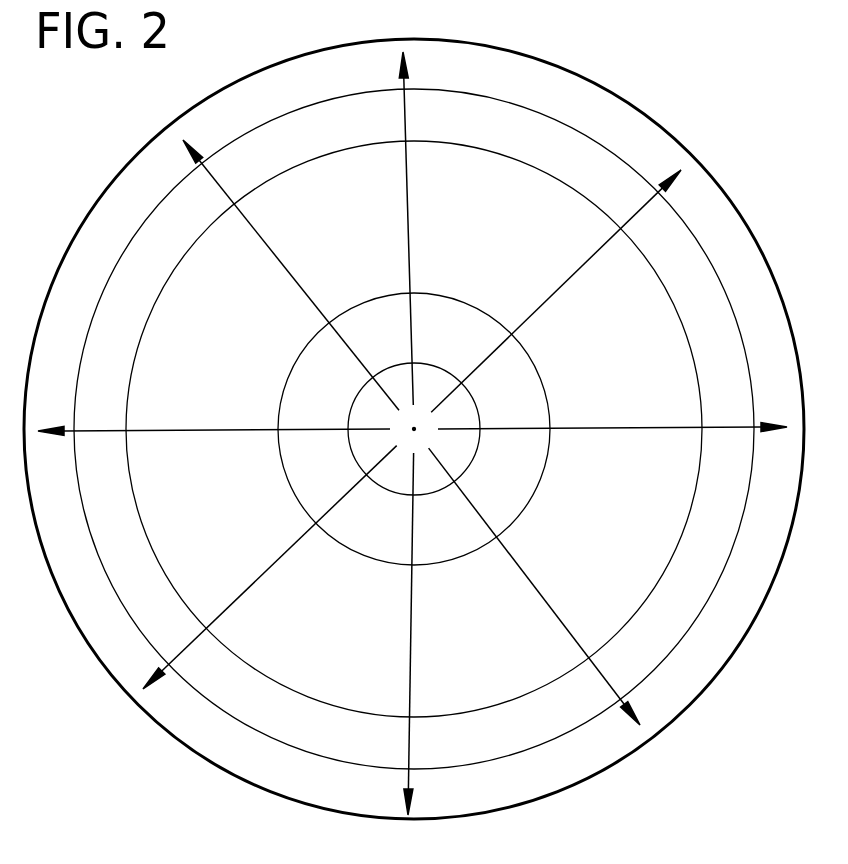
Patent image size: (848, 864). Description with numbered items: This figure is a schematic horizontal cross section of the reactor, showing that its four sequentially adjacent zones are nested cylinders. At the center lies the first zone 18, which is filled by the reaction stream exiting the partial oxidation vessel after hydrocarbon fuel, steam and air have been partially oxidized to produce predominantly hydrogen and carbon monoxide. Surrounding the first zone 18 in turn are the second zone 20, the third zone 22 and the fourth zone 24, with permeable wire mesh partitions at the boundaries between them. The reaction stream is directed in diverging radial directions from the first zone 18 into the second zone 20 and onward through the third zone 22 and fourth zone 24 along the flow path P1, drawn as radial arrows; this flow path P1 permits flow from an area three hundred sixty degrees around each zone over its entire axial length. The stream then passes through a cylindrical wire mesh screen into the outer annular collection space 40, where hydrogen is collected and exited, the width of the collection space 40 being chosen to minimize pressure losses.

The flow path P1 is at (415, 418).
The first zone 18 is at (458, 408).
The second zone 20 is at (527, 410).
The third zone 22 is at (645, 338).
The fourth zone 24 is at (723, 362).
The collection space 40 is at (752, 572).